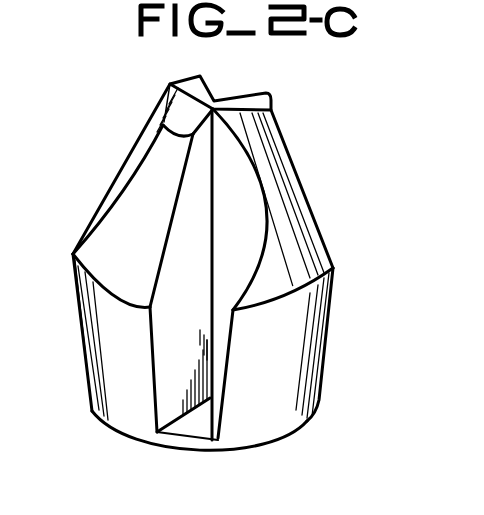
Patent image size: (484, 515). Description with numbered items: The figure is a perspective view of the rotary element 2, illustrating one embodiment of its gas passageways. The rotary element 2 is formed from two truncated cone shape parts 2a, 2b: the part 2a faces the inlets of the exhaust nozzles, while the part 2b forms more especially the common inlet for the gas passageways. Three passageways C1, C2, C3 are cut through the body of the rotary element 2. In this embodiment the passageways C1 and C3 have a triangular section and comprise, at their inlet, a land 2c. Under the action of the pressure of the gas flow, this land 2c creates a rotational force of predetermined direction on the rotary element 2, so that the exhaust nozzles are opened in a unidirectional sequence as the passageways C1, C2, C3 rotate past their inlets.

The rotary element 2 is at (235, 273).
The truncated cone shape part 2a is at (265, 419).
The truncated cone shape part 2b is at (280, 173).
The land 2c is at (237, 234).
The passageway C1 is at (204, 428).
The passageway C2 is at (134, 168).
The passageway C3 is at (238, 89).